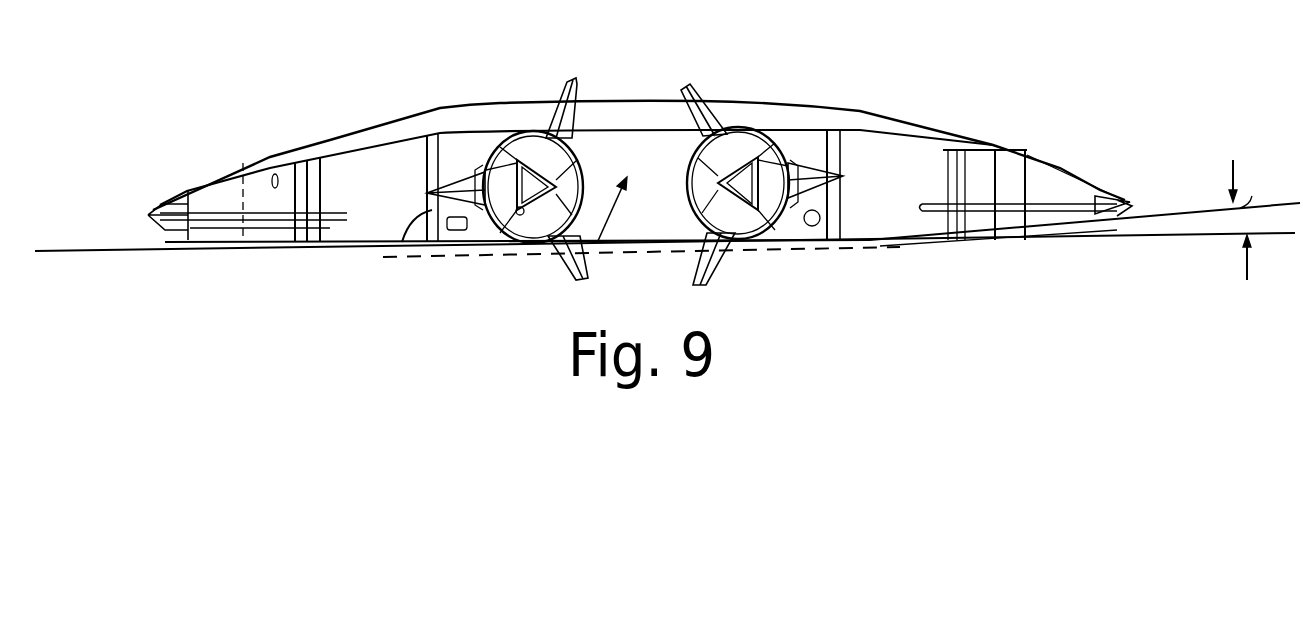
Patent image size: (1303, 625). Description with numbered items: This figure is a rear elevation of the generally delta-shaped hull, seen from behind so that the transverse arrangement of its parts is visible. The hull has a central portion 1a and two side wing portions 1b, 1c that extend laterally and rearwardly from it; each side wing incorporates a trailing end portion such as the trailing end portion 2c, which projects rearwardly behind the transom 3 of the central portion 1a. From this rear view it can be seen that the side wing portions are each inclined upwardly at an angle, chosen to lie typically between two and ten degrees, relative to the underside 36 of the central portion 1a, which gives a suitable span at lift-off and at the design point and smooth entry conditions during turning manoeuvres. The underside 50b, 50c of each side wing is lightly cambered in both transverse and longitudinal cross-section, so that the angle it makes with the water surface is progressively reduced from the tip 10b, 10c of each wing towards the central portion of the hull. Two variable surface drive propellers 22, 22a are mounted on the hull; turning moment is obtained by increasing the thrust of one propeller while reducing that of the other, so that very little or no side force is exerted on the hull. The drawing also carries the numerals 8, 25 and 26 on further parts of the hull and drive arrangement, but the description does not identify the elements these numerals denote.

The central portion 1a is at (630, 102).
The side wing portion 1b is at (909, 126).
The side wing portion 1c is at (370, 126).
The trailing end portion 2c is at (258, 160).
The transom 3 is at (557, 248).
The direction of rotation / flow arrow 8 is at (618, 210).
The tip 10b is at (1131, 198).
The tip 10c is at (153, 215).
The variable surface drive propeller 22 is at (295, 165).
The variable surface drive propeller 22a is at (403, 244).
The stern compartment 25 is at (997, 147).
The tail cone 26 is at (1064, 164).
The underside of the central portion 36 is at (620, 248).
The underside of side wing 50b is at (1107, 225).
The underside of side wing 50c is at (160, 243).